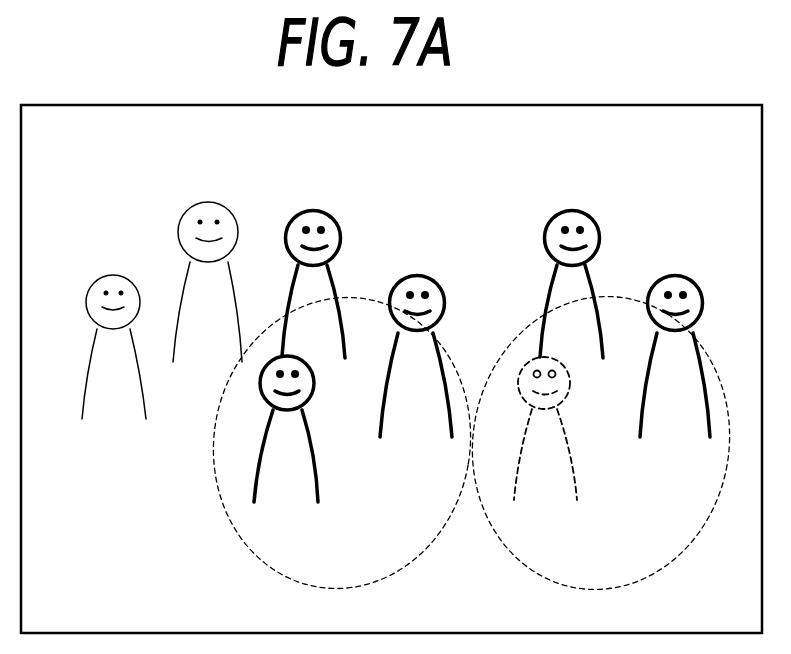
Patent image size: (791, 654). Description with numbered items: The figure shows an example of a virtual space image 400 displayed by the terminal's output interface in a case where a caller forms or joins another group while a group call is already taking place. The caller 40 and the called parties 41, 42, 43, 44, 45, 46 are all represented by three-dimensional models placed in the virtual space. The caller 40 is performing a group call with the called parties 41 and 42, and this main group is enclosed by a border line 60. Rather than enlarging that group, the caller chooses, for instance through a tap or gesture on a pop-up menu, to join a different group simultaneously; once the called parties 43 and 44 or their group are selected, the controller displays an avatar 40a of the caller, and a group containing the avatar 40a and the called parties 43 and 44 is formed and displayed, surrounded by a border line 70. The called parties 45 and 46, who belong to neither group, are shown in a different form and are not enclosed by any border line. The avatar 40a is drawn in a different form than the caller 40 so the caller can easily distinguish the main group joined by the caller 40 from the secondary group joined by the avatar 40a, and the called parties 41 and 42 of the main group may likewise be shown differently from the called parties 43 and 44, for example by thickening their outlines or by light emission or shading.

The virtual space image 400 is at (667, 105).
The caller 40 is at (313, 452).
The avatar 40a is at (577, 457).
The called party 41 is at (331, 215).
The called party 42 is at (433, 281).
The called party 43 is at (591, 219).
The called party 44 is at (693, 282).
The called party 45 is at (188, 210).
The called party 46 is at (100, 278).
The border line 60 is at (413, 551).
The border line 70 is at (672, 551).